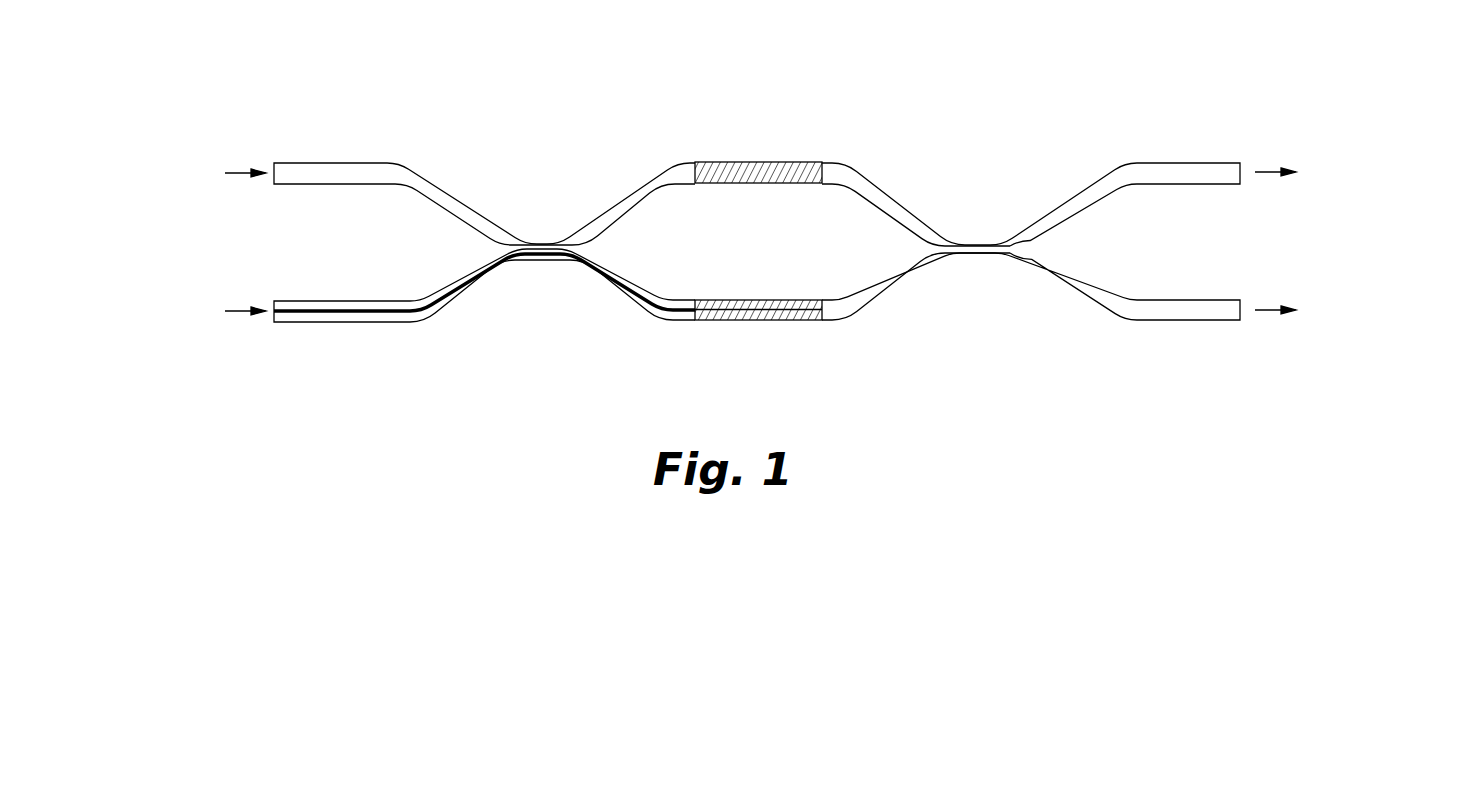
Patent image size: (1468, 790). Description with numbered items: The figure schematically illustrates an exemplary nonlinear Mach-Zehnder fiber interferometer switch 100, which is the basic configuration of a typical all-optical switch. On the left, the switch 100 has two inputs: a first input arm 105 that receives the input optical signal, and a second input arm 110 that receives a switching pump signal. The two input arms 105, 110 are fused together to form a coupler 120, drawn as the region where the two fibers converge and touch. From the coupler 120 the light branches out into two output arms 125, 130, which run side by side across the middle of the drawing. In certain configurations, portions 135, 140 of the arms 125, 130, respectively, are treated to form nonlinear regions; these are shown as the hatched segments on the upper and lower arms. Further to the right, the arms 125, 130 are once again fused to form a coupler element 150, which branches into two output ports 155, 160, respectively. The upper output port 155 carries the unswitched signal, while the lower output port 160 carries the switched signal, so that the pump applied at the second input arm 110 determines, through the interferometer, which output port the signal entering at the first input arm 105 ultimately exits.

The Mach-Zehnder fiber interferometer switch 100 is at (917, 101).
The first input arm 105 is at (332, 168).
The second input arm 110 is at (327, 323).
The coupler 120 is at (540, 240).
The output arm 125 is at (638, 195).
The output arm 130 is at (632, 297).
The nonlinear region portion 135 is at (795, 163).
The nonlinear region portion 140 is at (793, 315).
The coupler element 150 is at (978, 240).
The output port 155 is at (1200, 162).
The output port 160 is at (1200, 320).